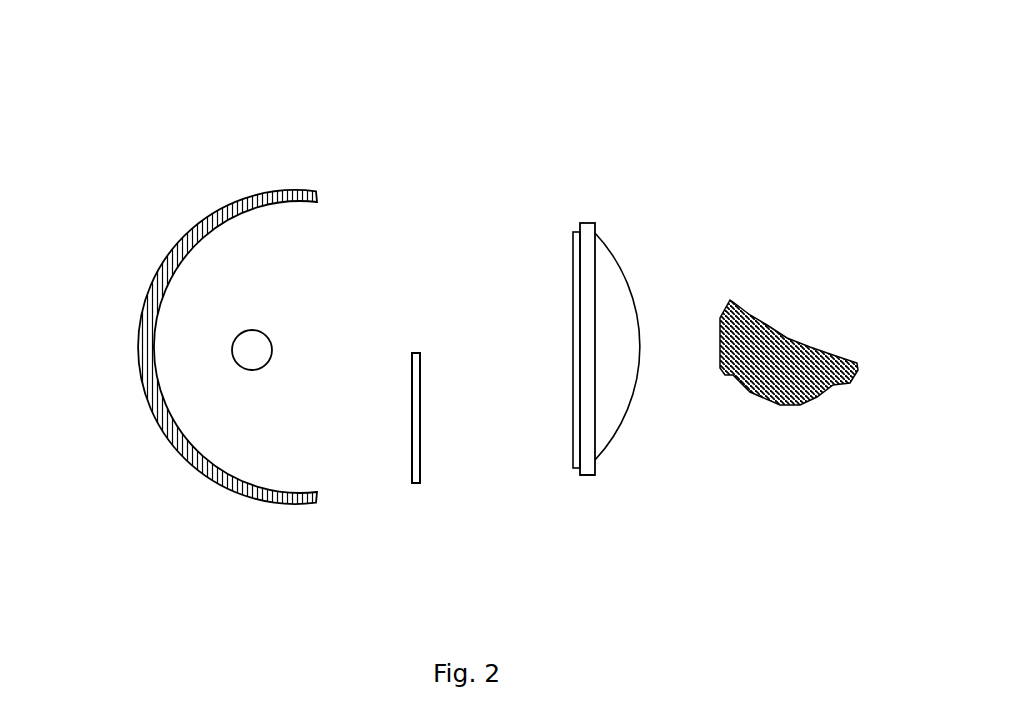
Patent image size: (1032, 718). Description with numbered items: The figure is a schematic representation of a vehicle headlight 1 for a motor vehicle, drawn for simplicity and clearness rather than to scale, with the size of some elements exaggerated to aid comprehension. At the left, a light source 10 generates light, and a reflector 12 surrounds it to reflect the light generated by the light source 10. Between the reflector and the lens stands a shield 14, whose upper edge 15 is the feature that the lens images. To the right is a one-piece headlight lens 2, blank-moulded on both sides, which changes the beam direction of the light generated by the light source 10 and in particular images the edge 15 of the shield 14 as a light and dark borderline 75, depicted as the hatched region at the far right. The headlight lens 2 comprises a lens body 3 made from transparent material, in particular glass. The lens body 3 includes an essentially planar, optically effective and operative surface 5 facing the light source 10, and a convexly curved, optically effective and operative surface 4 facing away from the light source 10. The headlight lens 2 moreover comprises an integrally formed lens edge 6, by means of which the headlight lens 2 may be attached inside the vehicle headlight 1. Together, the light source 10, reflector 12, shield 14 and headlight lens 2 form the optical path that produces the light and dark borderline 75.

The vehicle headlight 1 is at (556, 131).
The headlight lens 2 is at (624, 398).
The lens body 3 is at (613, 409).
The convexly curved optically effective and operative surface 4 is at (608, 453).
The essentially planar optically effective and operative surface 5 is at (572, 434).
The lens edge 6 is at (587, 458).
The light source 10 is at (252, 353).
The reflector 12 is at (236, 214).
The shield 14 is at (416, 455).
The edge of the shield 15 is at (416, 354).
The light and dark borderline 75 is at (776, 328).